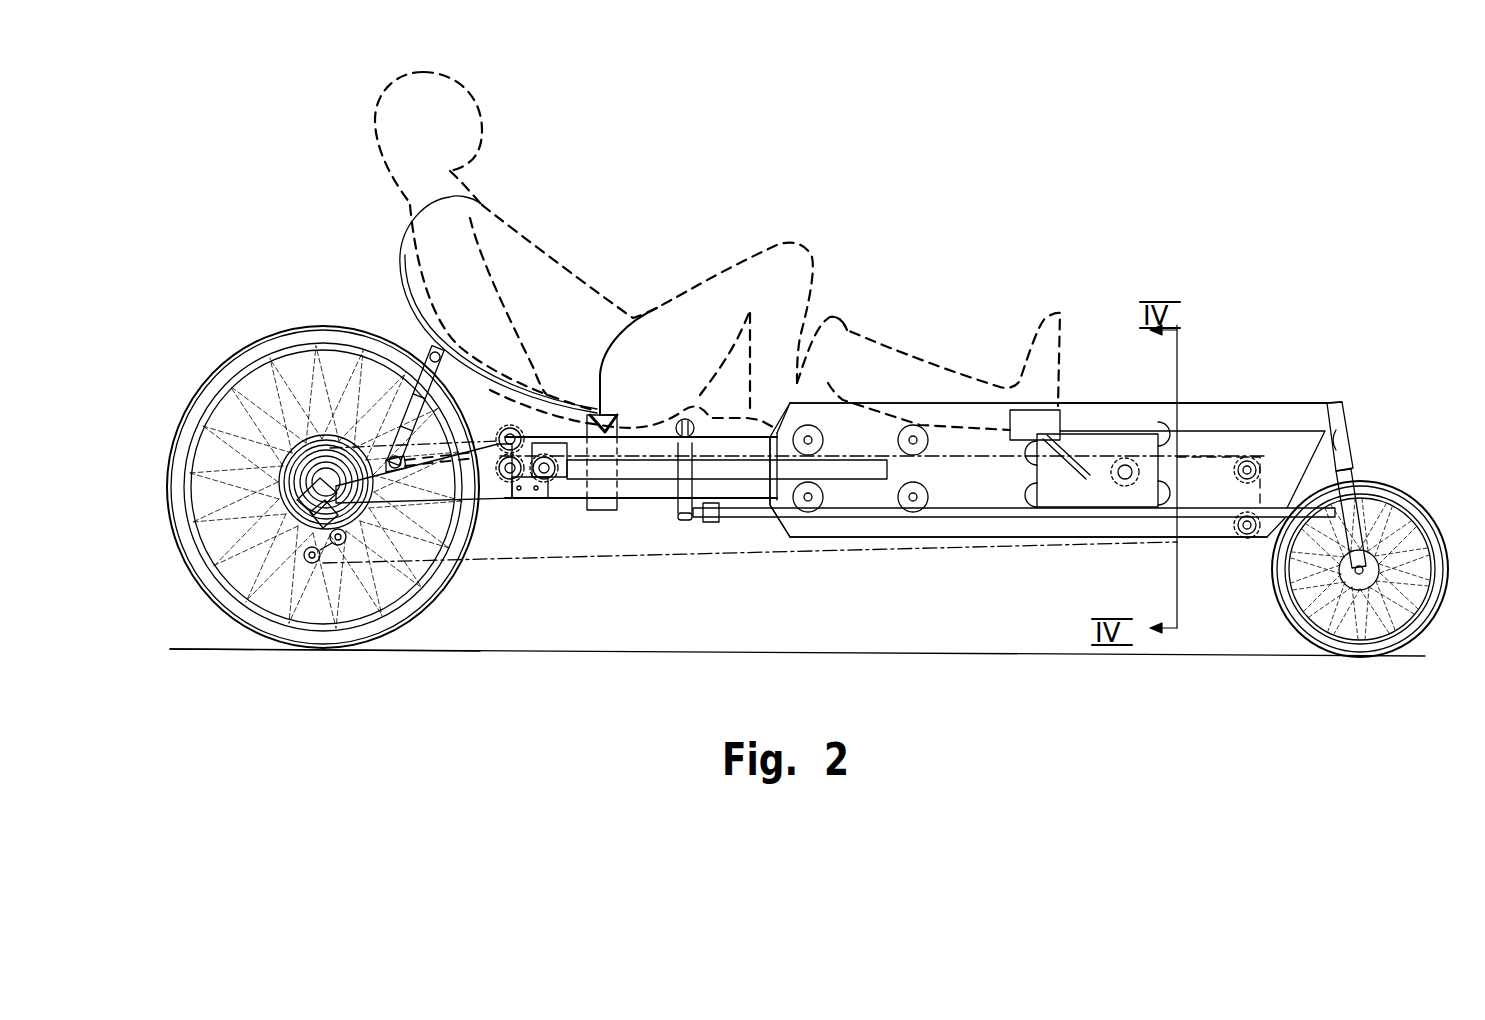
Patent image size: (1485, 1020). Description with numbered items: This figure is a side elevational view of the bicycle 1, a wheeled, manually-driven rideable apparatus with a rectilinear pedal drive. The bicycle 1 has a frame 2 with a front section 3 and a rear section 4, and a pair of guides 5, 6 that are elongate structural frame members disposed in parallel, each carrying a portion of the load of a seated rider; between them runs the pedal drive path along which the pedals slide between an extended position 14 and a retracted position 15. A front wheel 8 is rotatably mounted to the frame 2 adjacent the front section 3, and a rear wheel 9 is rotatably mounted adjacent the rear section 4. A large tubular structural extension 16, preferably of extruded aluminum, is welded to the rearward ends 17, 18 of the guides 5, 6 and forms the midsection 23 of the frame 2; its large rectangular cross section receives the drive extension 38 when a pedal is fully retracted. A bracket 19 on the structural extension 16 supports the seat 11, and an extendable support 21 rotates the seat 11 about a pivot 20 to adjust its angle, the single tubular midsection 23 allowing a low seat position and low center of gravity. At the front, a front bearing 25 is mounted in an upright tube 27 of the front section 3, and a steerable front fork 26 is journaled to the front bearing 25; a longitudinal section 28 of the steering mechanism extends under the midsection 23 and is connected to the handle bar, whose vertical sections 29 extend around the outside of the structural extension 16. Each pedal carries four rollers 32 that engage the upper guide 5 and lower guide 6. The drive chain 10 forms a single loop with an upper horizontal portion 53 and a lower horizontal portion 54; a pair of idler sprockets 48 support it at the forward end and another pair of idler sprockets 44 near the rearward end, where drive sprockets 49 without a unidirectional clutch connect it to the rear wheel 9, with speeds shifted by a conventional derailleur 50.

The bicycle 1 is at (884, 197).
The frame 2 is at (1197, 403).
The front section 3 is at (1408, 358).
The rear section 4 is at (270, 292).
The guide 5 is at (942, 403).
The guide 6 is at (993, 527).
The front wheel 8 is at (1428, 518).
The rear wheel 9 is at (208, 360).
The drive chain 10 is at (517, 560).
The seat 11 is at (402, 264).
The extended position 14 is at (1095, 308).
The retracted position 15 is at (840, 299).
The structural extension 16 is at (645, 498).
The rearward end 17 is at (773, 398).
The rearward end 18 is at (773, 525).
The bracket 19 is at (597, 512).
The pivot 20 is at (657, 308).
The extendable support 21 is at (398, 405).
The midsection 23 is at (631, 298).
The front bearing 25 is at (1338, 396).
The front fork 26 is at (1368, 525).
The upright tube 27 is at (1352, 440).
The longitudinal section 28 is at (965, 513).
The vertical sections 29 is at (680, 520).
The rollers 32 is at (808, 428).
The drive extension 38 is at (633, 467).
The idler sprockets 44 is at (498, 445).
The idler sprockets 48 is at (1240, 480).
The drive sprockets 49 is at (302, 463).
The derailleur 50 is at (322, 515).
The upper horizontal portion 53 is at (1197, 455).
The lower horizontal portion 54 is at (1072, 543).